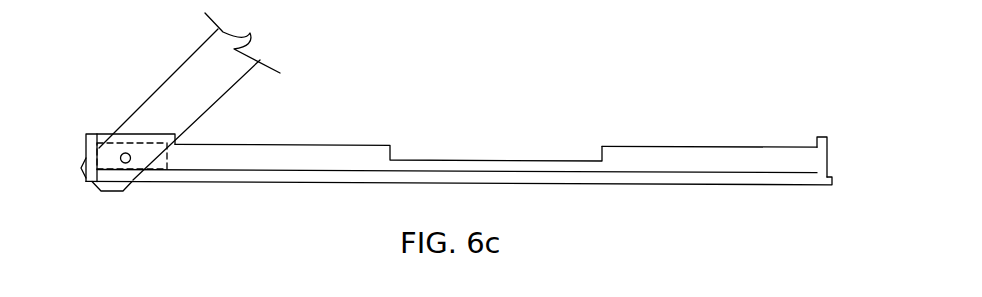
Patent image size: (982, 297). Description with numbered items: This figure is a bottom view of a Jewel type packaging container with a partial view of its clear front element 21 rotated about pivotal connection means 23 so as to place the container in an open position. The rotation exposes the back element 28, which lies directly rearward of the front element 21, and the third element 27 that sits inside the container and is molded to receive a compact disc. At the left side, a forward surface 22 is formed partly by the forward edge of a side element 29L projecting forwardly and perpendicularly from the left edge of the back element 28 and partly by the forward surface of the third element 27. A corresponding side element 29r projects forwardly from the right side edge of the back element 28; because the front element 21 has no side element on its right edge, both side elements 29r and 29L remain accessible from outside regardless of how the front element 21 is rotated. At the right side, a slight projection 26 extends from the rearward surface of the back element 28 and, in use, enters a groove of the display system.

The front element 21 is at (200, 46).
The forward surface 22 is at (107, 133).
The pivotal connection means 23 is at (127, 163).
The slight projection 26 is at (837, 182).
The third element 27 is at (676, 157).
The back element 28 is at (609, 186).
The side element 29L is at (83, 160).
The side element 29r is at (830, 153).